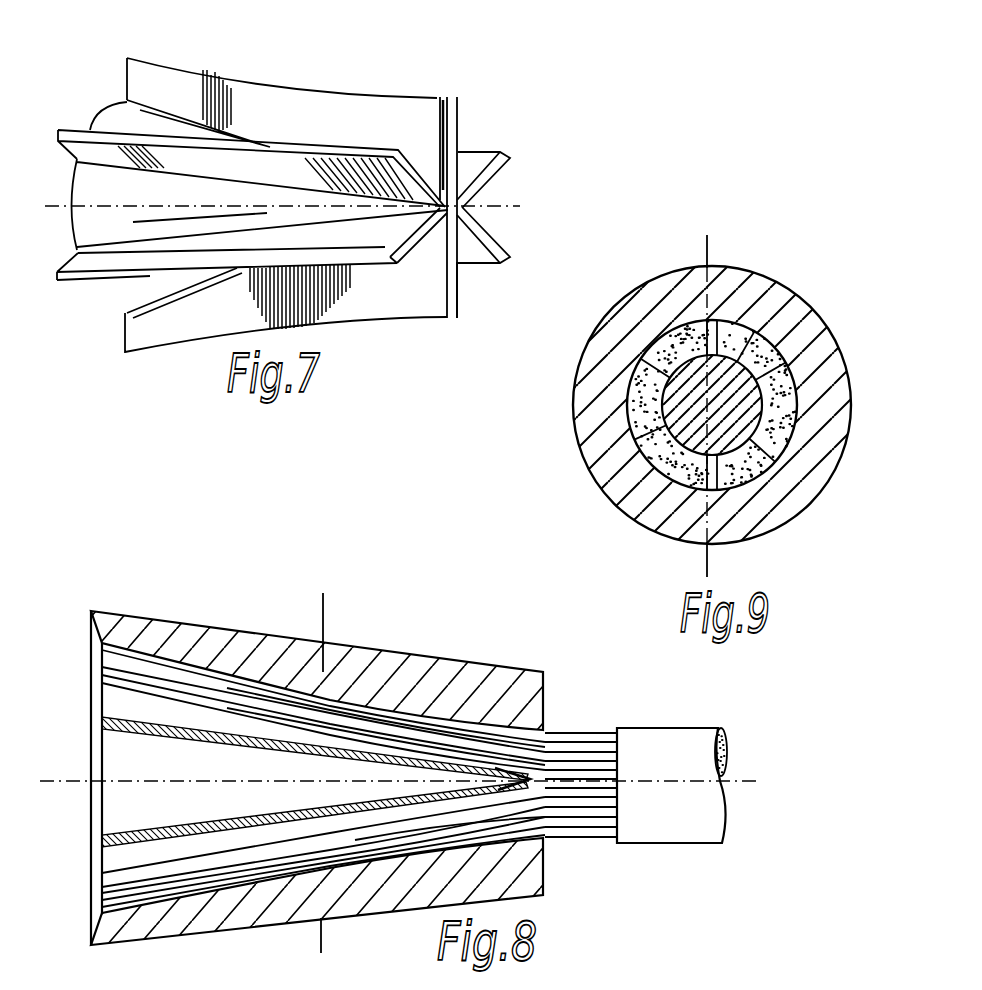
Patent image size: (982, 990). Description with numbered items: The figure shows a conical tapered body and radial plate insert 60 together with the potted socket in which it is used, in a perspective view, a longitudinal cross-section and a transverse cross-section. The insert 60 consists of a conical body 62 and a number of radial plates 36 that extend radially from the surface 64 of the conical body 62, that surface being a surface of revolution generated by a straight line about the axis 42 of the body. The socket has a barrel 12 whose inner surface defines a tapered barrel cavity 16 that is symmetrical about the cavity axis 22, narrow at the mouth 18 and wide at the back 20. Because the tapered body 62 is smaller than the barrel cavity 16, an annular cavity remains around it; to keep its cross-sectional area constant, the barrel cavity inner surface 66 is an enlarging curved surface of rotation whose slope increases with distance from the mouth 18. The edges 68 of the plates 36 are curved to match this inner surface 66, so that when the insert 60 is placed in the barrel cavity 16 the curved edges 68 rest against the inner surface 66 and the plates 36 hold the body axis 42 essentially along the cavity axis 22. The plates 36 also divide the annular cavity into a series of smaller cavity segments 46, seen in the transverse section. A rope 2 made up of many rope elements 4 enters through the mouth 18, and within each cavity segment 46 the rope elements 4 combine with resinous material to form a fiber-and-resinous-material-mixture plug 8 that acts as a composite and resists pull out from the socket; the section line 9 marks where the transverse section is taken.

In FIG. 8, the rope 2 is at (658, 728).
In FIG. 8, the rope elements 4 is at (597, 733).
In FIG. 9, the fiber-and-resinous-material-mixture plug 8 is at (700, 248).
In FIG. 8, the fiber-and-resinous-material-mixture plug 8 is at (430, 728).
In FIG. 8, the section line 9 is at (318, 598).
In FIG. 9, the barrel 12 is at (743, 265).
In FIG. 8, the barrel 12 is at (105, 612).
In FIG. 9, the barrel cavity 16 is at (628, 400).
In FIG. 8, the barrel cavity 16 is at (208, 673).
In FIG. 8, the mouth 18 is at (543, 738).
In FIG. 8, the back 20 is at (88, 818).
In FIG. 8, the cavity axis 22 is at (97, 766).
In FIG. 7, the radial plates 36 is at (460, 107).
In FIG. 9, the radial plates 36 is at (790, 350).
In FIG. 7, the axis of tapered body 42 is at (88, 204).
In FIG. 9, the cavity segments 46 is at (795, 403).
In FIG. 7, the conical tapered body and radial plate insert 60 is at (466, 272).
In FIG. 9, the conical tapered body and radial plate insert 60 is at (750, 440).
In FIG. 8, the conical tapered body and radial plate insert 60 is at (89, 670).
In FIG. 7, the conical body 62 is at (110, 118).
In FIG. 8, the conical body 62 is at (103, 703).
In FIG. 7, the surface of conical tapered body 64 is at (187, 123).
In FIG. 9, the surface of conical tapered body 64 is at (772, 323).
In FIG. 8, the surface of conical tapered body 64 is at (123, 700).
In FIG. 9, the barrel cavity inner surface 66 is at (662, 340).
In FIG. 8, the barrel cavity inner surface 66 is at (168, 667).
In FIG. 7, the edges of plates 68 is at (323, 88).
In FIG. 8, the edges of plates 68 is at (376, 703).